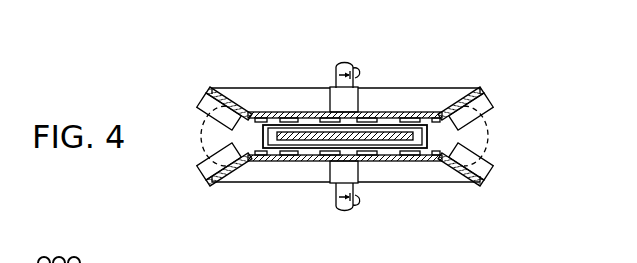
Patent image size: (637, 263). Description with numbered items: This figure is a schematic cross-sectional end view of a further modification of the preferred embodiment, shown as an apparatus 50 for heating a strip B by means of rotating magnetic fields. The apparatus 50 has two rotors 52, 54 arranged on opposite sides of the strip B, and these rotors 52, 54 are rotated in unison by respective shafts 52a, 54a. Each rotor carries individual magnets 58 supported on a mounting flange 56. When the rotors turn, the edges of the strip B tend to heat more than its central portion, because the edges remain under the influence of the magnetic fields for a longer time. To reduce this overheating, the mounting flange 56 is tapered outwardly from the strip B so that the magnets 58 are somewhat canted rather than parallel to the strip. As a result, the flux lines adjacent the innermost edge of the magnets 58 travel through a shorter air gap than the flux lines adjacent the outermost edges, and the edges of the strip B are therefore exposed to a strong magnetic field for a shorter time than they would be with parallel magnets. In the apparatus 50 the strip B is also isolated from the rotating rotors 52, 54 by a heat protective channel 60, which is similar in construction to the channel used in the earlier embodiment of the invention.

The apparatus 50 is at (298, 78).
The rotor 52 is at (237, 84).
The shaft 52a is at (336, 63).
The rotor 54 is at (435, 186).
The shaft 54a is at (358, 214).
The mounting flange 56 is at (208, 98).
The magnets 58 is at (486, 104).
The heat protective channel 60 is at (265, 161).
The strip B is at (392, 137).